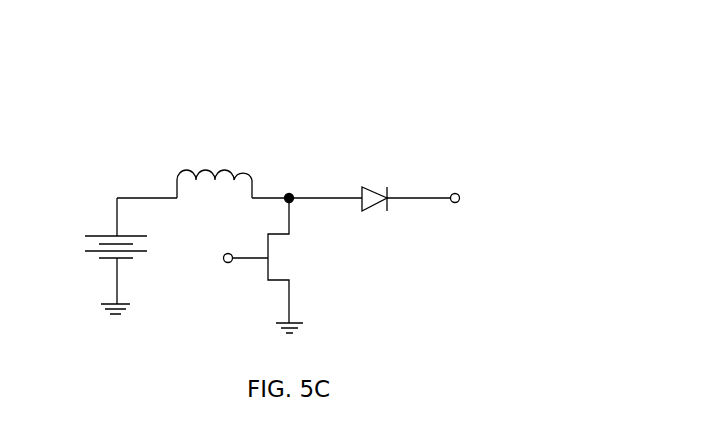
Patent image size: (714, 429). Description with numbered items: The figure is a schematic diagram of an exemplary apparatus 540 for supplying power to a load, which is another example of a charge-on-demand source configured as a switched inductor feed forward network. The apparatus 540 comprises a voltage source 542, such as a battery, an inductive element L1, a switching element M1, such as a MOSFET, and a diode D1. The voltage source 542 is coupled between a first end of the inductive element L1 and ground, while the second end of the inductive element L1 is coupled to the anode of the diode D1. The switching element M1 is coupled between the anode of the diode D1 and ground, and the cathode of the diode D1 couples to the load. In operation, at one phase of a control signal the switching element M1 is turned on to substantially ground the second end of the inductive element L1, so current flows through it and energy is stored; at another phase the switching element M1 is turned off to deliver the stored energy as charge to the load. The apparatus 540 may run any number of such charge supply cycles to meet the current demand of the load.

The apparatus 540 is at (458, 92).
The voltage source 542 is at (102, 235).
The inductive element L1 is at (214, 171).
The diode D1 is at (375, 182).
The switching element M1 is at (272, 260).